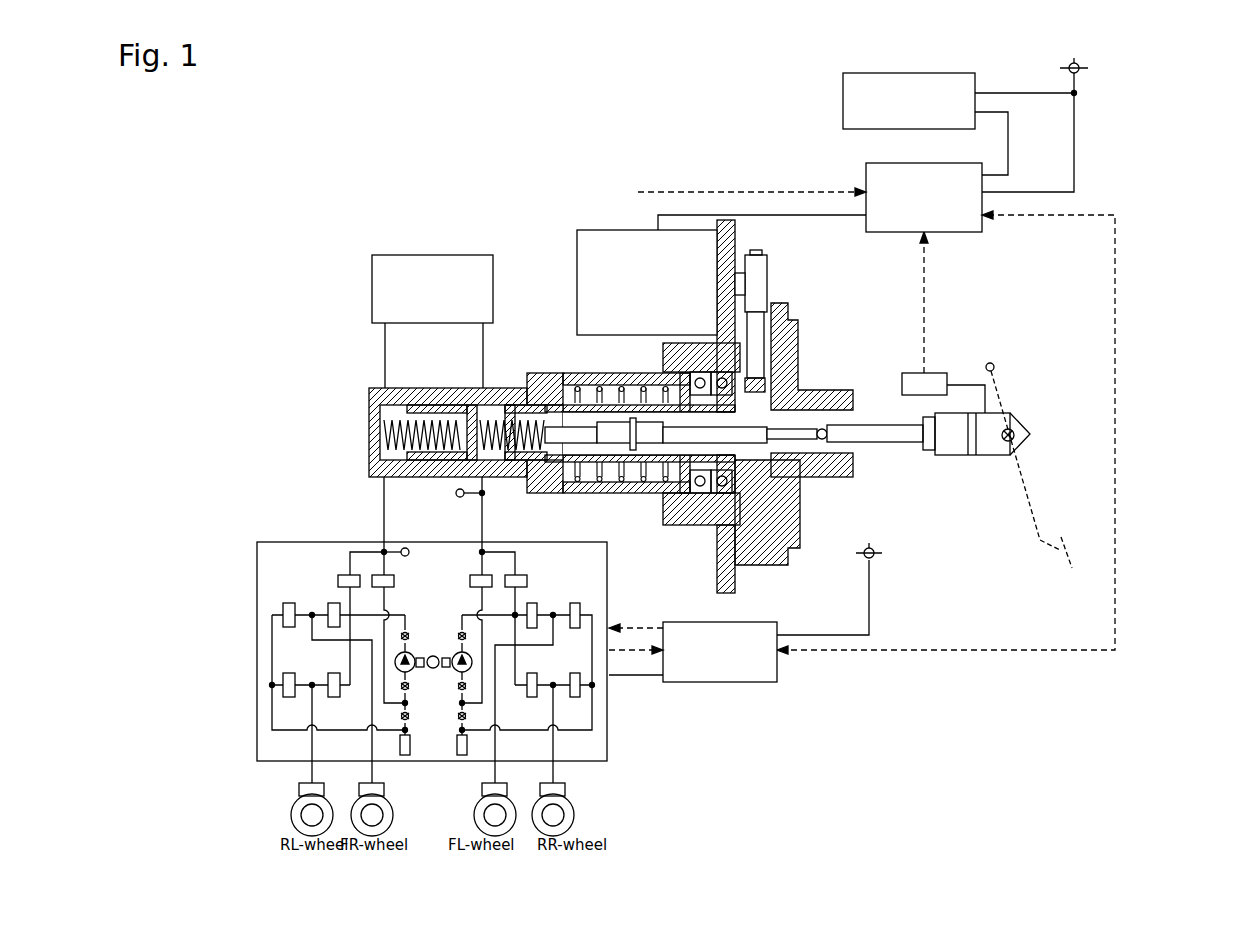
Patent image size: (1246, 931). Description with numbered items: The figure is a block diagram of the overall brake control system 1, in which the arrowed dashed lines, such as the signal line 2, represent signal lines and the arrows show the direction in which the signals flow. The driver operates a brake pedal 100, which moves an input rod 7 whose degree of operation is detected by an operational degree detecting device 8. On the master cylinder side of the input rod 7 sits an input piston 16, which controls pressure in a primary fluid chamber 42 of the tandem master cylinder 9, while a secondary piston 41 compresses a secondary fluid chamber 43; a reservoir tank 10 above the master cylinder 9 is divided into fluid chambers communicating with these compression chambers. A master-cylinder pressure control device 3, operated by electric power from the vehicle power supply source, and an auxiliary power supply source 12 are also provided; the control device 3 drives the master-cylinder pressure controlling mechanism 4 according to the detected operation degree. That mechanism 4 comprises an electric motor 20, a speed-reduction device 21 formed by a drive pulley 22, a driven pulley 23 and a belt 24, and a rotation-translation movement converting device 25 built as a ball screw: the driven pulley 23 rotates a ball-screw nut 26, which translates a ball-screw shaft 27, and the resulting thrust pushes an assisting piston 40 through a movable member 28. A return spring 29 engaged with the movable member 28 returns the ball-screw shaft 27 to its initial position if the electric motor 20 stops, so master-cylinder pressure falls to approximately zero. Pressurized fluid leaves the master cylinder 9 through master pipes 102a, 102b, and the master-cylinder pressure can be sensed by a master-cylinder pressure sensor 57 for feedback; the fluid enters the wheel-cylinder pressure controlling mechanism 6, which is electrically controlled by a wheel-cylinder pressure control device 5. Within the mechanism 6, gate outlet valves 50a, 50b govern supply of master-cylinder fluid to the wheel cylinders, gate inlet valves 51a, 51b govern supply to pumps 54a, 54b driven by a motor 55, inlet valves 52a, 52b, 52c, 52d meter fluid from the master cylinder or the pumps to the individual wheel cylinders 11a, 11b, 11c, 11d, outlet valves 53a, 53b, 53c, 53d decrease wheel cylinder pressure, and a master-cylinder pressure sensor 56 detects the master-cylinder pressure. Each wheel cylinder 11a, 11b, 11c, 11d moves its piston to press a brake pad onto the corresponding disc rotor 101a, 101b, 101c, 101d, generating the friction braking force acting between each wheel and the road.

The brake control system 1 is at (722, 160).
The signal line 2 is at (950, 650).
The master-cylinder pressure control device 3 is at (925, 163).
The master-cylinder pressure controlling mechanism 4 is at (779, 310).
The wheel-cylinder pressure control device 5 is at (722, 622).
The wheel-cylinder pressure controlling mechanism 6 is at (546, 542).
The input rod 7 is at (879, 440).
The operational degree detecting device 8 is at (935, 373).
The master cylinder 9 is at (395, 388).
The reservoir tank 10 is at (436, 255).
The auxiliary power supply source 12 is at (930, 73).
The input piston 16 is at (617, 437).
The electric motor 20 is at (592, 230).
The speed-reduction device 21 is at (768, 311).
The drive pulley 22 is at (767, 283).
The driven pulley 23 is at (788, 512).
The belt 24 is at (758, 250).
The rotation-translation movement converting device 25 is at (735, 560).
The ball-screw nut 26 is at (767, 372).
The ball-screw shaft 27 is at (795, 400).
The movable member 28 is at (665, 478).
The return spring 29 is at (604, 385).
The assisting piston 40 is at (548, 373).
The secondary piston 41 is at (438, 388).
The primary fluid chamber 42 is at (490, 455).
The secondary fluid chamber 43 is at (392, 455).
The gate outlet valve 50a is at (520, 572).
The gate outlet valve 50b is at (340, 572).
The gate inlet valve 51a is at (474, 572).
The gate inlet valve 51b is at (388, 590).
The inlet valve 52a is at (532, 600).
The inlet valve 52b is at (330, 600).
The inlet valve 52c is at (335, 699).
The inlet valve 52d is at (530, 699).
The outlet valve 53a is at (575, 600).
The outlet valve 53b is at (285, 600).
The outlet valve 53c is at (290, 670).
The outlet valve 53d is at (572, 670).
The pump 54a is at (455, 700).
The pump 54b is at (413, 672).
The motor 55 is at (436, 655).
The master-cylinder pressure sensor 56 is at (408, 556).
The master-cylinder pressure sensor 57 is at (458, 498).
The brake pedal 100 is at (1025, 485).
The disc rotor 101a is at (480, 790).
The disc rotor 101b is at (386, 790).
The disc rotor 101c is at (297, 788).
The disc rotor 101d is at (567, 790).
The master pipe 102a is at (482, 518).
The master pipe 102b is at (384, 532).
The wheel cylinder 11a is at (500, 780).
The wheel cylinder 11b is at (366, 780).
The wheel cylinder 11c is at (297, 780).
The wheel cylinder 11d is at (557, 780).